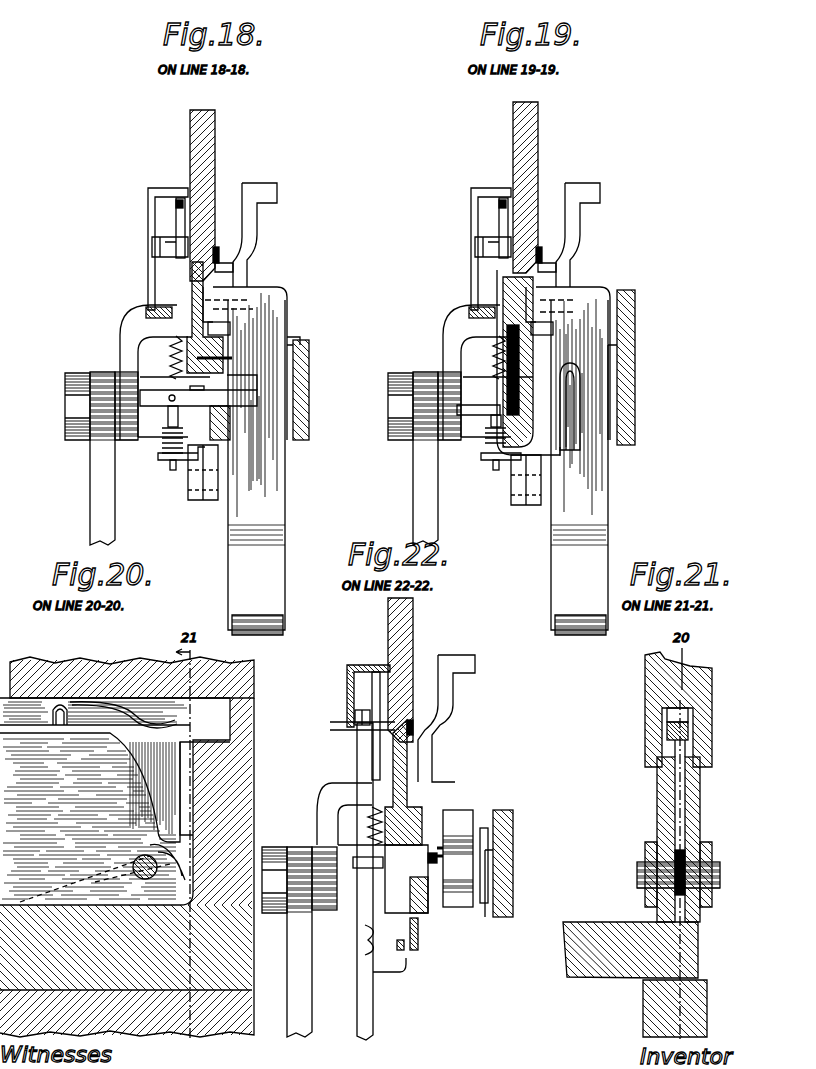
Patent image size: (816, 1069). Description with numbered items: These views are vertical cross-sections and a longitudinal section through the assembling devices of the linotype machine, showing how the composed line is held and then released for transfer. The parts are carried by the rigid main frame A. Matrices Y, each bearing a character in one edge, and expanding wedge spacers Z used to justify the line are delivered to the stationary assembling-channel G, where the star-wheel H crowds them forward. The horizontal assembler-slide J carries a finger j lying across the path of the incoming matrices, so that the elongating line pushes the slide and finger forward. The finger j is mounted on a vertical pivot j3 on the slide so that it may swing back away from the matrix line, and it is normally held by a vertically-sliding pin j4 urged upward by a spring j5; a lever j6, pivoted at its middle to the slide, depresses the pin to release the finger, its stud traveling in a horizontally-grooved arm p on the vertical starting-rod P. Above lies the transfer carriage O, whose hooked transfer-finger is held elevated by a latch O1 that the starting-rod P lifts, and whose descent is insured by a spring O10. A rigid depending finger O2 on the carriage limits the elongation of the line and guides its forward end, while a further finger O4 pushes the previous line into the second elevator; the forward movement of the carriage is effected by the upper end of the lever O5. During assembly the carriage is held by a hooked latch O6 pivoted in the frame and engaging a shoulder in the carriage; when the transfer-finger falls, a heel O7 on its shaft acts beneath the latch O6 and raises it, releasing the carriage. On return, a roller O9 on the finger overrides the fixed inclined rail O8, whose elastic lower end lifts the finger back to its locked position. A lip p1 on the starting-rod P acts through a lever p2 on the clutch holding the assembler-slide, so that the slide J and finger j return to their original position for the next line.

In FIG. 18, the main frame A is at (247, 137).
In FIG. 19, the main frame A is at (570, 148).
In FIG. 20, the main frame A is at (52, 661).
In FIG. 22, the main frame A is at (443, 631).
In FIG. 21, the main frame A is at (742, 693).
In FIG. 18, the transfer carriage O is at (270, 185).
In FIG. 19, the transfer carriage O is at (598, 232).
In FIG. 20, the transfer carriage O is at (75, 860).
In FIG. 22, the transfer carriage O is at (405, 753).
In FIG. 21, the transfer carriage O is at (700, 817).
In FIG. 18, the latch O1 is at (217, 247).
In FIG. 19, the latch O1 is at (540, 255).
In FIG. 22, the latch O1 is at (412, 720).
In FIG. 18, the depending finger O2 is at (247, 594).
In FIG. 19, the depending finger O2 is at (582, 584).
In FIG. 19, the finger O4 is at (603, 452).
In FIG. 18, the lever O5 is at (78, 478).
In FIG. 19, the lever O5 is at (400, 482).
In FIG. 22, the lever O5 is at (302, 969).
In FIG. 20, the hooked latch O6 is at (115, 725).
In FIG. 21, the hooked latch O6 is at (690, 750).
In FIG. 20, the heel O7 is at (154, 856).
In FIG. 21, the heel O7 is at (690, 860).
In FIG. 18, the fixed rail O8 is at (125, 308).
In FIG. 19, the fixed rail O8 is at (435, 325).
In FIG. 22, the fixed rail O8 is at (317, 736).
In FIG. 18, the roller O9 is at (125, 249).
In FIG. 19, the roller O9 is at (450, 249).
In FIG. 22, the roller O9 is at (331, 710).
In FIG. 18, the spring O10 is at (130, 198).
In FIG. 19, the spring O10 is at (480, 361).
In FIG. 22, the spring O10 is at (357, 662).
In FIG. 18, the matrices Y is at (309, 353).
In FIG. 19, the matrices Y is at (636, 359).
In FIG. 22, the matrices Y is at (497, 815).
In FIG. 18, the expanding wedge spacers Z is at (285, 532).
In FIG. 19, the expanding wedge spacers Z is at (608, 516).
In FIG. 18, the assembler-slide J is at (214, 500).
In FIG. 19, the assembler-slide J is at (537, 505).
In FIG. 22, the assembler-slide J is at (418, 938).
In FIG. 18, the finger j is at (205, 394).
In FIG. 19, the finger j is at (655, 392).
In FIG. 18, the vertical pivot j3 is at (228, 410).
In FIG. 18, the vertically-sliding pin j4 is at (173, 470).
In FIG. 19, the vertically-sliding pin j4 is at (495, 470).
In FIG. 18, the spring j5 is at (161, 456).
In FIG. 19, the spring j5 is at (484, 460).
In FIG. 18, the lever j6 is at (168, 426).
In FIG. 19, the lever j6 is at (491, 426).
In FIG. 22, the starting-rod P is at (358, 758).
In FIG. 22, the horizontally-grooved arm p is at (366, 939).
In FIG. 22, the lip p1 is at (406, 971).
In FIG. 22, the lever p2 is at (405, 947).
In FIG. 22, the assembling-channel G is at (483, 908).
In FIG. 22, the star-wheel H is at (455, 822).